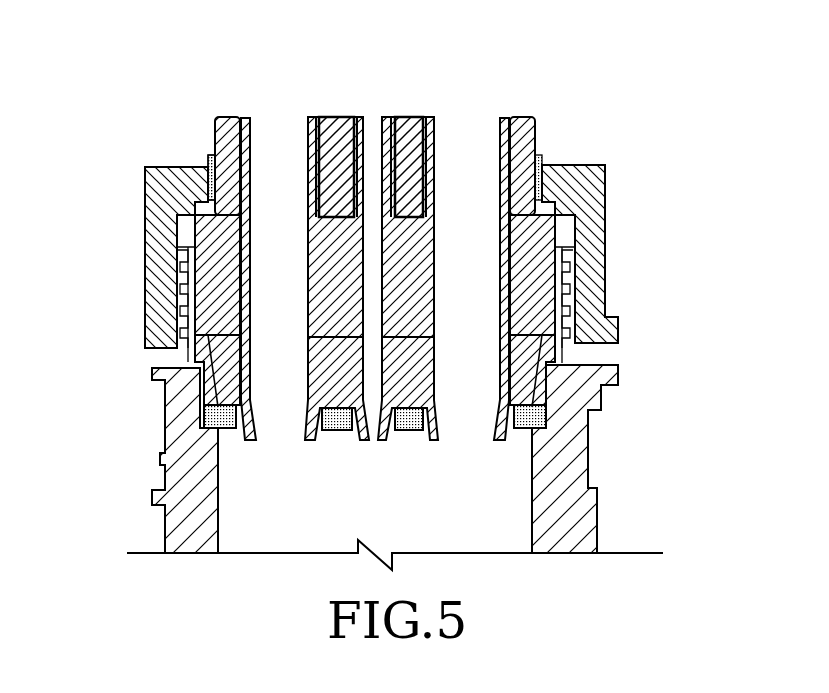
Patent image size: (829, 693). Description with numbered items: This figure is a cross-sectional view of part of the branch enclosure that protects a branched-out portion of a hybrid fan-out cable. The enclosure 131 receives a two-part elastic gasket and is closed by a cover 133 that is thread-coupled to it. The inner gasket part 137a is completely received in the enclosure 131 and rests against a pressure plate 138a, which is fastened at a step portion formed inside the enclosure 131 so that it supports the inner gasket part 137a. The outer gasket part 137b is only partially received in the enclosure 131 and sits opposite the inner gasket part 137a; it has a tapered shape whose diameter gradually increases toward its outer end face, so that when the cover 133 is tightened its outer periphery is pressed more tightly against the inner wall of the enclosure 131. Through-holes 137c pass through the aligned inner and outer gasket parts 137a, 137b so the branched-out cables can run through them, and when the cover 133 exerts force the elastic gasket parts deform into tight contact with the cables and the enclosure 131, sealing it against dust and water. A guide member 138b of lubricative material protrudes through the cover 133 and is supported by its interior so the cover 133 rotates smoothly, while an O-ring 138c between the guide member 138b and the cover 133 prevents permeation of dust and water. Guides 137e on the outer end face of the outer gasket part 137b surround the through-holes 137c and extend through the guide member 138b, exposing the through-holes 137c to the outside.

The enclosure 131 is at (176, 531).
The cover 133 is at (594, 205).
The inner gasket part 137a is at (527, 374).
The outer gasket part 137b is at (522, 118).
The through-holes 137c is at (460, 130).
The guides 137e is at (500, 118).
The pressure plate 138a is at (545, 426).
The guide member 138b is at (442, 153).
The O-ring 138c is at (542, 137).